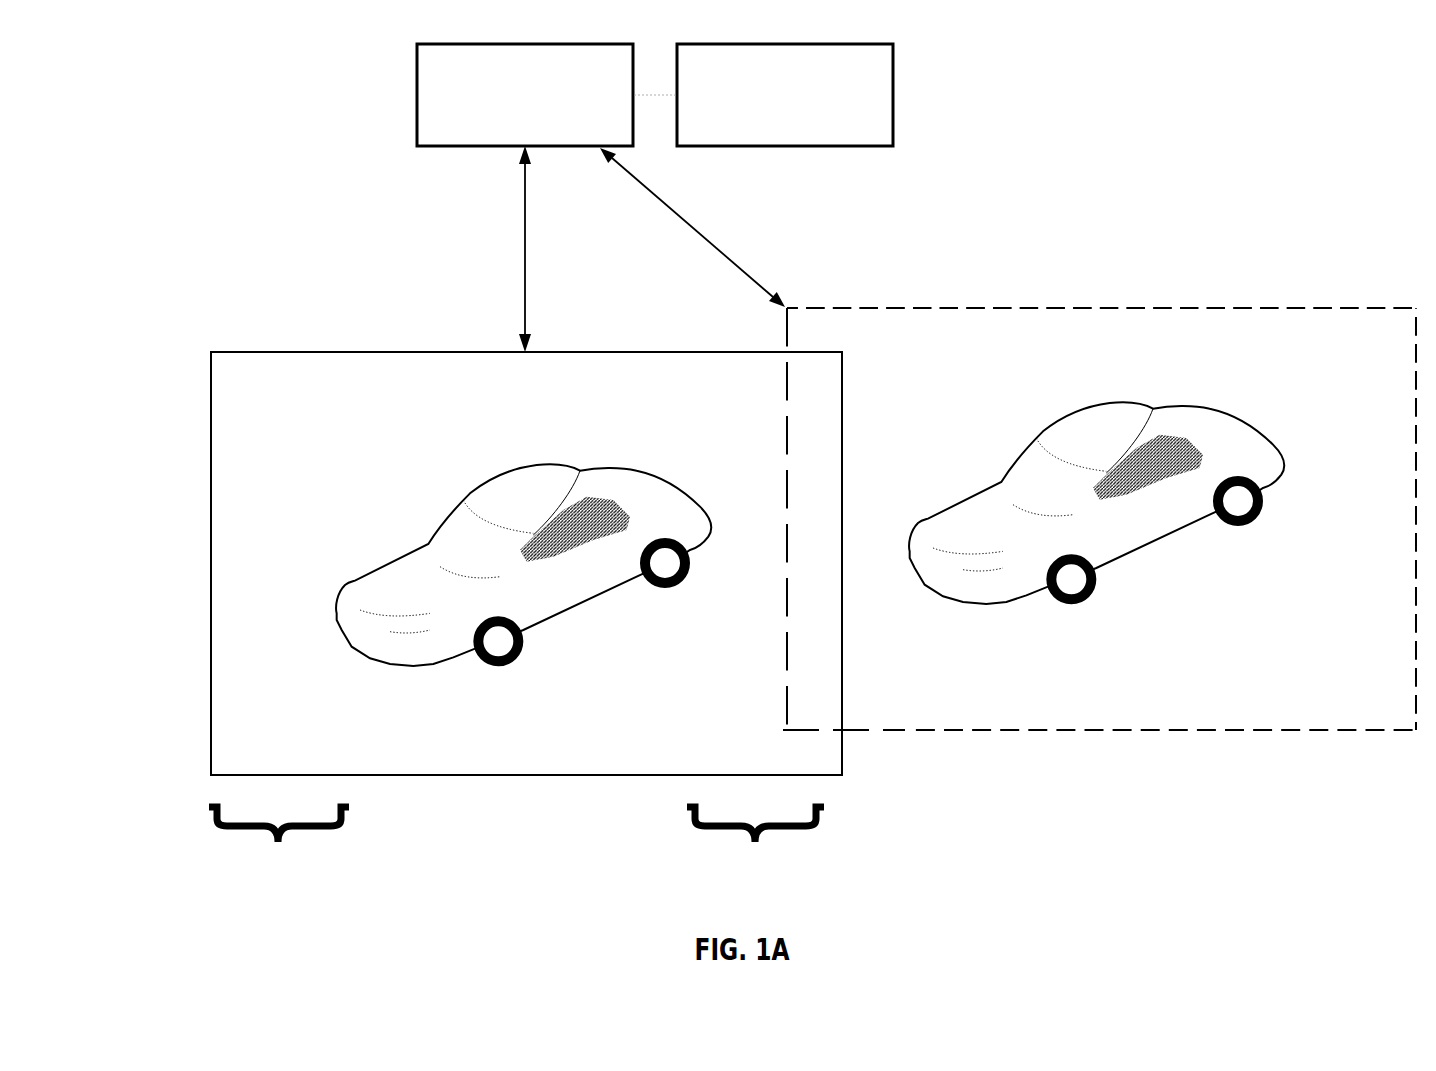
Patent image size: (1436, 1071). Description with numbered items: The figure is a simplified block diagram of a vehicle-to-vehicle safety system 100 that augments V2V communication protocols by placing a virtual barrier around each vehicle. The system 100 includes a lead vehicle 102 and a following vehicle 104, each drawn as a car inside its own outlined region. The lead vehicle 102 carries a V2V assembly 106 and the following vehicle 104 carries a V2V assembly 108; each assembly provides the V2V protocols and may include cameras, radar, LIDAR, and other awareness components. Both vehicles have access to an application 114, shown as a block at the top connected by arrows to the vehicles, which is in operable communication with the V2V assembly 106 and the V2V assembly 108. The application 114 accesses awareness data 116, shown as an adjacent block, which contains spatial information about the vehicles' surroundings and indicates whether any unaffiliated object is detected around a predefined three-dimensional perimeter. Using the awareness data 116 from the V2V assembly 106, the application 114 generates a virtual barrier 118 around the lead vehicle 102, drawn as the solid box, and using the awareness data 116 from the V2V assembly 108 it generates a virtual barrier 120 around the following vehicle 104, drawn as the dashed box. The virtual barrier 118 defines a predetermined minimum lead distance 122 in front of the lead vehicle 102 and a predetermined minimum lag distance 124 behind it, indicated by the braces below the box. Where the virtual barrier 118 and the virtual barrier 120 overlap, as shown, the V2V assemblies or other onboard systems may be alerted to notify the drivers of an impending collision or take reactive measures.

The system 100 is at (163, 88).
The lead vehicle 102 is at (324, 292).
The following vehicle 104 is at (862, 262).
The V2V assembly 106 is at (423, 345).
The V2V assembly 108 is at (965, 290).
The application 114 is at (525, 95).
The awareness data 116 is at (785, 95).
The virtual barrier 118 is at (598, 352).
The virtual barrier 120 is at (1262, 309).
The lead distance 122 is at (283, 861).
The lag distance 124 is at (757, 854).